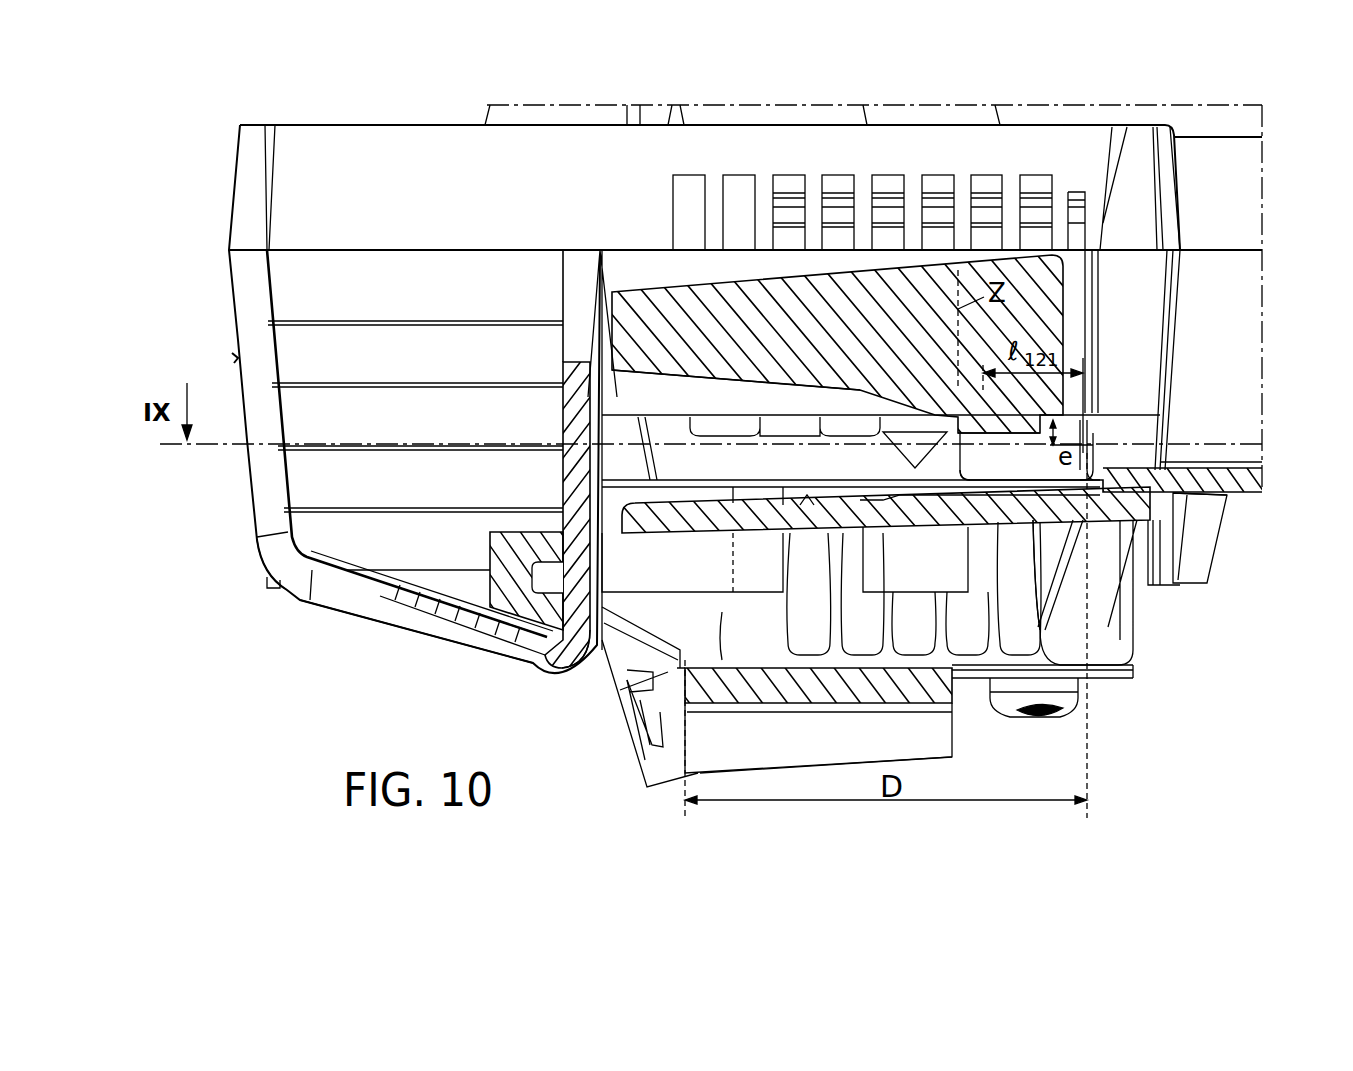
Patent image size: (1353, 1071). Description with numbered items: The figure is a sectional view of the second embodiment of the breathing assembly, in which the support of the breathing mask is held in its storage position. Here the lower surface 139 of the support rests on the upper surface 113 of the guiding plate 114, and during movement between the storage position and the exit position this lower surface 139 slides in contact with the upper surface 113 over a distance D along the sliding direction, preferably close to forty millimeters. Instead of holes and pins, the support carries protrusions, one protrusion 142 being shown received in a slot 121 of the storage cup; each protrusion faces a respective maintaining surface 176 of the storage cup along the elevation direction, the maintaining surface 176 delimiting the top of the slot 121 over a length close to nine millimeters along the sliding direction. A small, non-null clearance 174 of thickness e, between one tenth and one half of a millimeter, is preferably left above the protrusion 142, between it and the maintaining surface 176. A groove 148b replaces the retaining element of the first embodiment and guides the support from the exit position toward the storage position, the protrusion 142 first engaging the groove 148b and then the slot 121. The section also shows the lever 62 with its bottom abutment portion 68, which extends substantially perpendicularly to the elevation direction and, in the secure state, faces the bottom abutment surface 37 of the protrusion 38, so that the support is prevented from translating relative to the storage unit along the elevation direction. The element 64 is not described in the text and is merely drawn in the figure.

The groove 148b is at (657, 397).
The lever 62 is at (327, 533).
The protrusion 38 is at (510, 571).
The bottom abutment portion 68 is at (513, 623).
The bottom abutment surface 37 is at (530, 625).
The housing end wall 64 is at (597, 663).
The upper surface 113 is at (632, 690).
The lower surface 139 is at (722, 655).
The guiding plate 114 is at (853, 730).
The clearance 174 is at (1073, 433).
The protrusion 142 is at (1040, 447).
The slot 121 is at (1038, 472).
The maintaining surface 176 is at (1030, 465).